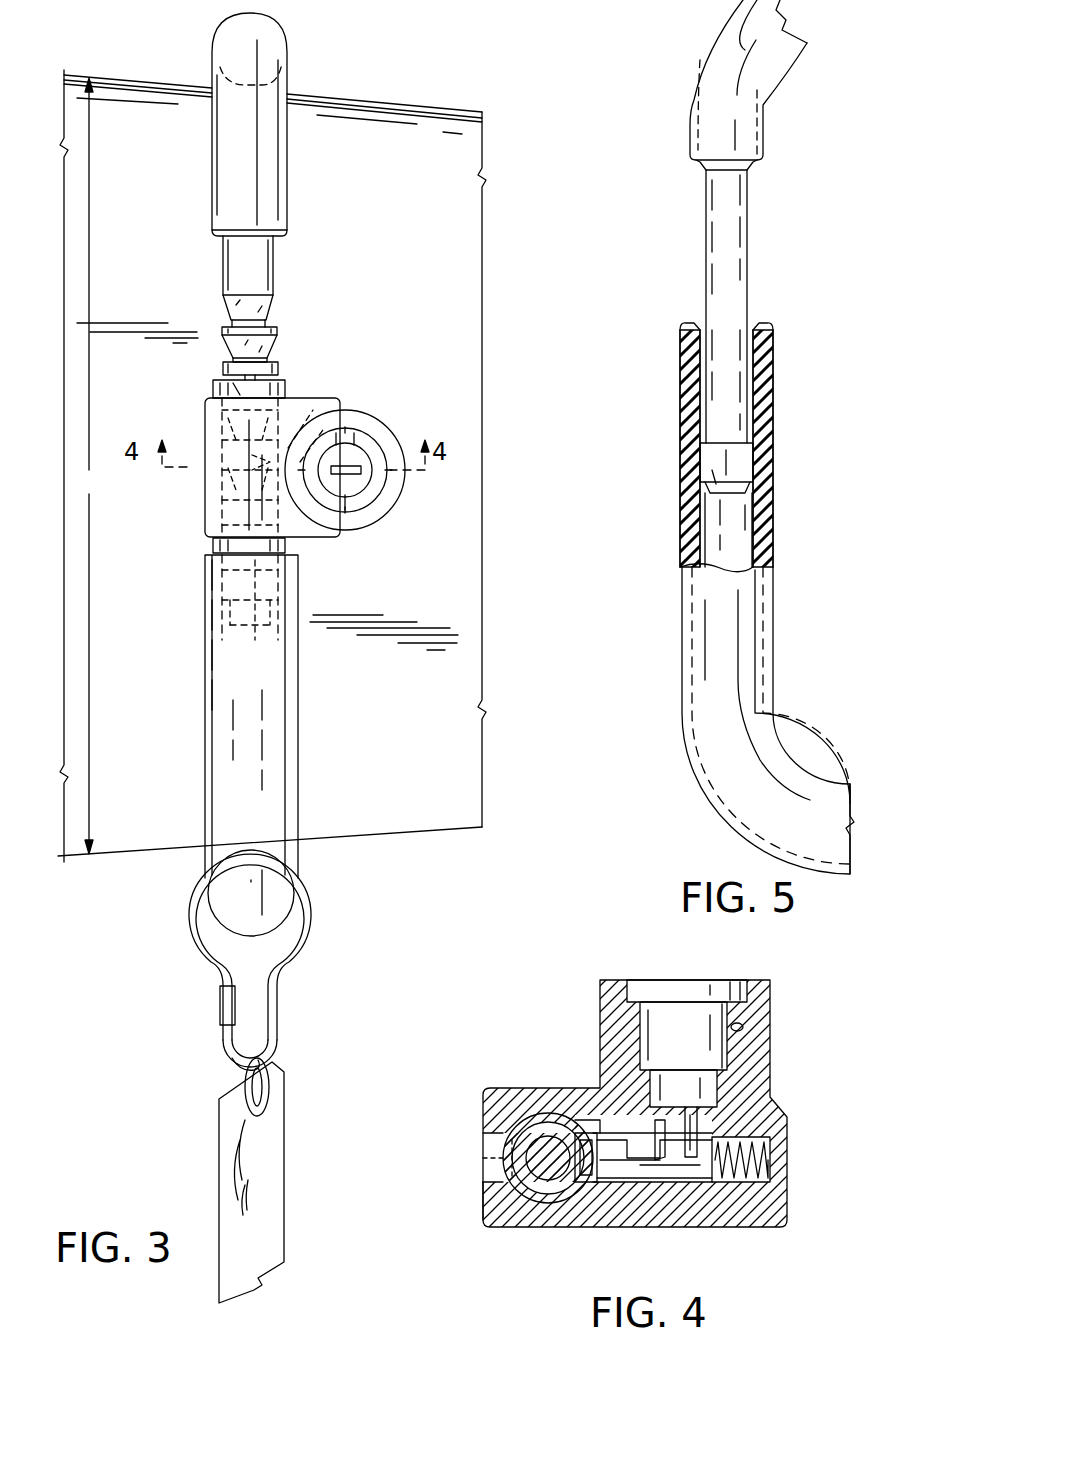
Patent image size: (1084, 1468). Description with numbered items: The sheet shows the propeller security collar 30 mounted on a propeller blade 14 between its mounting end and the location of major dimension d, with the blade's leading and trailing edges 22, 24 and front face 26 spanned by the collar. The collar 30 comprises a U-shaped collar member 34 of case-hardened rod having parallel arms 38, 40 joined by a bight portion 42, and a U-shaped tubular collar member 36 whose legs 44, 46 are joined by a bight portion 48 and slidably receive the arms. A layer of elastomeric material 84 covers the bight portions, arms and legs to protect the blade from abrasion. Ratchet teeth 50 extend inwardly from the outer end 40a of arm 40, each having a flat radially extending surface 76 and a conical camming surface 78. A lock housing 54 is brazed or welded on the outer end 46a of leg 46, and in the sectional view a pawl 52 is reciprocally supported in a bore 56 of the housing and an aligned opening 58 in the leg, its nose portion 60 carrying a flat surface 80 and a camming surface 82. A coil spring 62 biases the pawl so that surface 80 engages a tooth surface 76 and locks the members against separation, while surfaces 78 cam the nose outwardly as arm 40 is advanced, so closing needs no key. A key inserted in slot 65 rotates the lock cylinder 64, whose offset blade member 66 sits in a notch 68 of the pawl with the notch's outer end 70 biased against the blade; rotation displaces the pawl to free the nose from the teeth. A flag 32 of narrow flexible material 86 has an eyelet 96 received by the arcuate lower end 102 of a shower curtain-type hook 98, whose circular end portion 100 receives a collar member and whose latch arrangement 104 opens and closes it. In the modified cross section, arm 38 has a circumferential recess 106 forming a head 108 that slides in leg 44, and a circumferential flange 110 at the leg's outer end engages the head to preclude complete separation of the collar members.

In FIG. 3, the propeller blade 14 is at (453, 110).
In FIG. 3, the leading edge 22 is at (387, 98).
In FIG. 3, the trailing edge 24 is at (407, 837).
In FIG. 3, the front face 26 is at (463, 583).
In FIG. 3, the collar 30 is at (395, 287).
In FIG. 3, the flag 32 is at (286, 1225).
In FIG. 3, the collar member 34 is at (290, 62).
In FIG. 5, the collar member 34 is at (697, 62).
In FIG. 3, the collar member 36 is at (303, 717).
In FIG. 5, the collar member 36 is at (692, 780).
In FIG. 4, the collar member 36 is at (504, 1115).
In FIG. 5, the arm 38 is at (747, 142).
In FIG. 3, the arm 40 is at (267, 250).
In FIG. 4, the arm 40 is at (527, 1148).
In FIG. 3, the outer end of arm 40a is at (217, 607).
In FIG. 3, the bight portion 42 is at (227, 40).
In FIG. 5, the tubular leg 44 is at (758, 540).
In FIG. 3, the tubular leg 46 is at (215, 547).
In FIG. 3, the outer end of leg 46a is at (215, 388).
In FIG. 4, the outer end of leg 46a is at (522, 1202).
In FIG. 3, the bight portion 48 is at (224, 908).
In FIG. 3, the ratchet teeth 50 is at (279, 328).
In FIG. 4, the ratchet teeth 50 is at (520, 1188).
In FIG. 3, the pawl 52 is at (330, 407).
In FIG. 4, the pawl 52 is at (677, 1183).
In FIG. 3, the lock housing 54 is at (393, 423).
In FIG. 4, the lock housing 54 is at (773, 1032).
In FIG. 4, the bore 56 is at (715, 1182).
In FIG. 4, the opening 58 is at (590, 1182).
In FIG. 3, the nose portion 60 is at (289, 446).
In FIG. 4, the nose portion 60 is at (600, 1120).
In FIG. 4, the coil spring 62 is at (767, 1160).
In FIG. 3, the lock cylinder 64 is at (387, 487).
In FIG. 4, the lock cylinder 64 is at (652, 982).
In FIG. 3, the key receiving slot 65 is at (353, 475).
In FIG. 4, the blade member 66 is at (698, 1117).
In FIG. 4, the notch 68 is at (657, 1157).
In FIG. 4, the outer end of notch 70 is at (651, 1198).
In FIG. 3, the flat radially extending surface 76 is at (227, 325).
In FIG. 3, the conical camming surface 78 is at (238, 343).
In FIG. 4, the conical camming surface 78 is at (517, 1167).
In FIG. 3, the flat surface 80 is at (303, 538).
In FIG. 4, the flat surface 80 is at (557, 1113).
In FIG. 3, the camming surface 82 is at (268, 462).
In FIG. 3, the layer of elastomeric material 84 is at (212, 170).
In FIG. 5, the layer of elastomeric material 84 is at (768, 517).
In FIG. 3, the flag material 86 is at (230, 1134).
In FIG. 3, the eyelet 96 is at (269, 1112).
In FIG. 3, the hook 98 is at (293, 968).
In FIG. 3, the circular end portion 100 is at (310, 905).
In FIG. 3, the arcuate lower end 102 is at (228, 1070).
In FIG. 3, the latch arrangement 104 is at (219, 997).
In FIG. 5, the circumferential recess 106 is at (745, 370).
In FIG. 5, the head 108 is at (738, 462).
In FIG. 5, the circumferential flange 110 is at (752, 317).